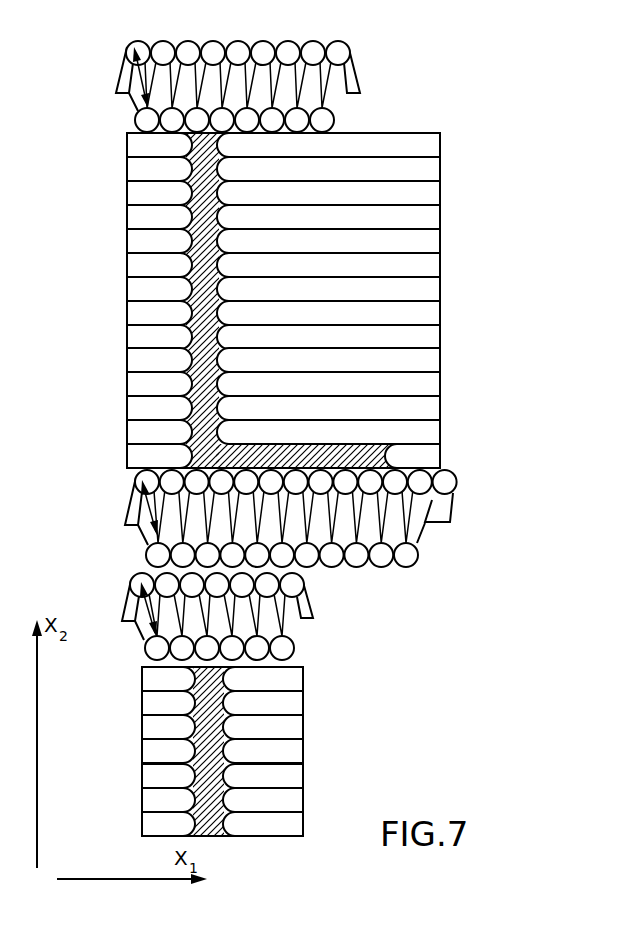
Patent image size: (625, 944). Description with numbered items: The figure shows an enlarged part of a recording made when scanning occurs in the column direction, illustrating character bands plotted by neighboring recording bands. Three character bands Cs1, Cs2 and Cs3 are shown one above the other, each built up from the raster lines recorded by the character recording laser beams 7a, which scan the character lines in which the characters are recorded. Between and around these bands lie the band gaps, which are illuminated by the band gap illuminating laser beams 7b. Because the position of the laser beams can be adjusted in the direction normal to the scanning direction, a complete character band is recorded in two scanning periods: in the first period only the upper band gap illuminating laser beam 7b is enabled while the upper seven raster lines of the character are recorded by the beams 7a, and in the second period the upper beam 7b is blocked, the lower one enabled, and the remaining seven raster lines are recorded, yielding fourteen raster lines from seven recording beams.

The laser beams for scanning character lines 7a is at (521, 473).
The band gap illuminating laser beams 7b is at (286, 350).
The character band Cs1 is at (87, 51).
The character band Cs2 is at (89, 313).
The character band Cs3 is at (92, 835).